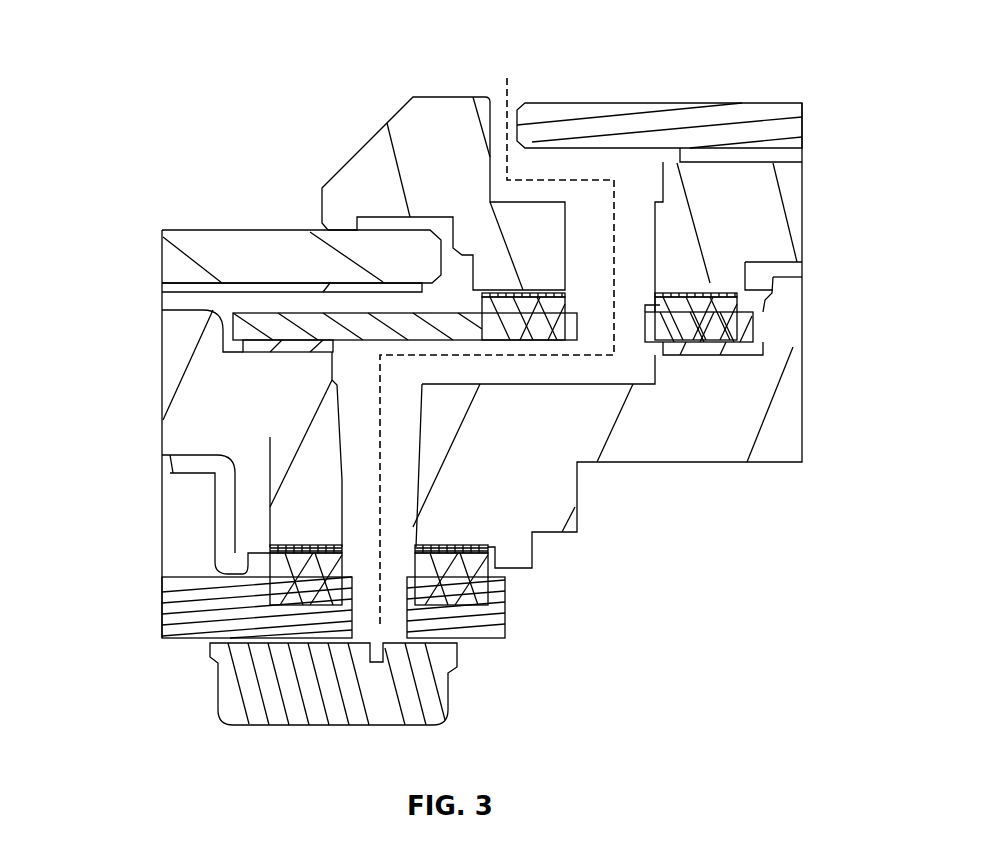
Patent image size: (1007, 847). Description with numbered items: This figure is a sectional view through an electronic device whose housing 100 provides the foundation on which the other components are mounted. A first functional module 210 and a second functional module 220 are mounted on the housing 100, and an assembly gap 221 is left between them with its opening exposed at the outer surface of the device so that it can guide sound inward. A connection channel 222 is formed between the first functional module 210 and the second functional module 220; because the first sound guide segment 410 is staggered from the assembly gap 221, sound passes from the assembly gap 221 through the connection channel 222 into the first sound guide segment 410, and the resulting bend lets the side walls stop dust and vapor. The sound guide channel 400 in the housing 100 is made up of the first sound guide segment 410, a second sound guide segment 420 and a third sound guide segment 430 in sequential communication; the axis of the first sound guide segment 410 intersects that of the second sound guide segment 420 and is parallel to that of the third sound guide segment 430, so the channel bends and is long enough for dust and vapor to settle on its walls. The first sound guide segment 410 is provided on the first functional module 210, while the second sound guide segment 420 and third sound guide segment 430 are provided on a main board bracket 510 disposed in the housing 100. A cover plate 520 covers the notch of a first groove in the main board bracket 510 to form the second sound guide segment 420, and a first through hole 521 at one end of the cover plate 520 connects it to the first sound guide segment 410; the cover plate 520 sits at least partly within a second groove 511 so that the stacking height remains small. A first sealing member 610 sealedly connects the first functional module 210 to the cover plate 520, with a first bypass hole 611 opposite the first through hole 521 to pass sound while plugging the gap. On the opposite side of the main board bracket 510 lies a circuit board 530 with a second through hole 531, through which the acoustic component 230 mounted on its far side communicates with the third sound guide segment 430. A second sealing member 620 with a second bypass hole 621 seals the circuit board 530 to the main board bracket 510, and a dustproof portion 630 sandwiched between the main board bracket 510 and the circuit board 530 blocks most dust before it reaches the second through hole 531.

The housing 100 is at (230, 245).
The first functional module 210 is at (668, 135).
The second functional module 220 is at (368, 160).
The assembly gap 221 is at (510, 136).
The connection channel 222 is at (570, 157).
The acoustic component 230 is at (220, 655).
The sound guide channel 400 is at (86, 247).
The first sound guide segment 410 is at (613, 250).
The second sound guide segment 420 is at (447, 351).
The third sound guide segment 430 is at (380, 428).
The main board bracket 510 is at (753, 413).
The second groove 511 is at (755, 348).
The cover plate 520 is at (735, 333).
The first through hole 521 is at (620, 323).
The circuit board 530 is at (190, 622).
The second through hole 531 is at (377, 615).
The first sealing member 610 is at (724, 298).
The first bypass hole 611 is at (593, 305).
The second sealing member 620 is at (297, 562).
The second bypass hole 621 is at (368, 572).
The dustproof portion 630 is at (248, 558).